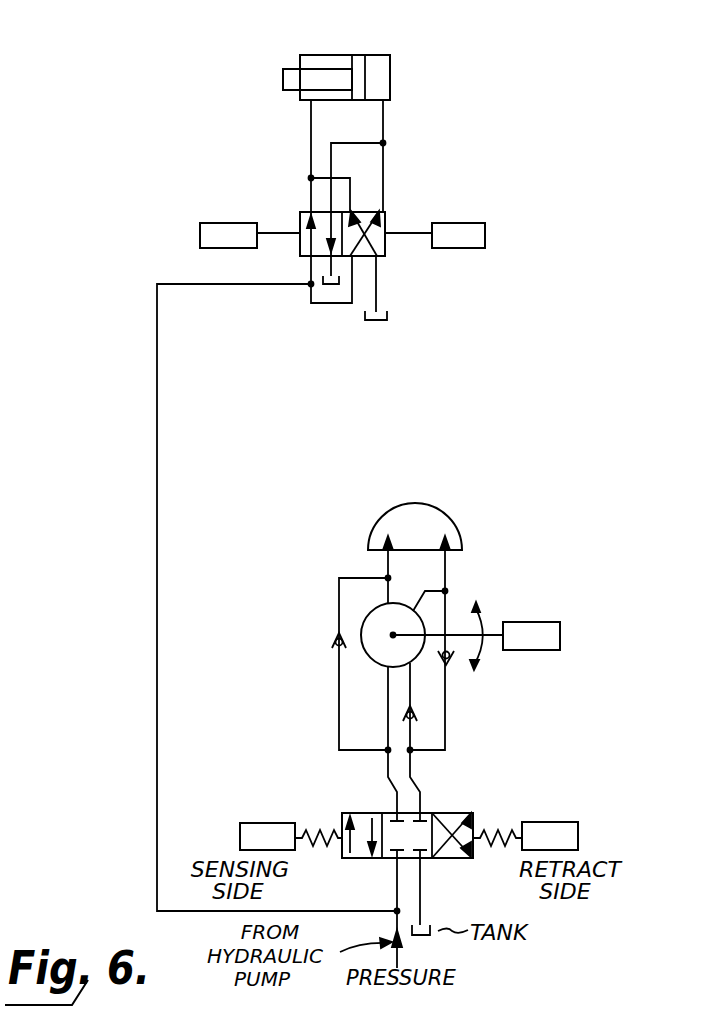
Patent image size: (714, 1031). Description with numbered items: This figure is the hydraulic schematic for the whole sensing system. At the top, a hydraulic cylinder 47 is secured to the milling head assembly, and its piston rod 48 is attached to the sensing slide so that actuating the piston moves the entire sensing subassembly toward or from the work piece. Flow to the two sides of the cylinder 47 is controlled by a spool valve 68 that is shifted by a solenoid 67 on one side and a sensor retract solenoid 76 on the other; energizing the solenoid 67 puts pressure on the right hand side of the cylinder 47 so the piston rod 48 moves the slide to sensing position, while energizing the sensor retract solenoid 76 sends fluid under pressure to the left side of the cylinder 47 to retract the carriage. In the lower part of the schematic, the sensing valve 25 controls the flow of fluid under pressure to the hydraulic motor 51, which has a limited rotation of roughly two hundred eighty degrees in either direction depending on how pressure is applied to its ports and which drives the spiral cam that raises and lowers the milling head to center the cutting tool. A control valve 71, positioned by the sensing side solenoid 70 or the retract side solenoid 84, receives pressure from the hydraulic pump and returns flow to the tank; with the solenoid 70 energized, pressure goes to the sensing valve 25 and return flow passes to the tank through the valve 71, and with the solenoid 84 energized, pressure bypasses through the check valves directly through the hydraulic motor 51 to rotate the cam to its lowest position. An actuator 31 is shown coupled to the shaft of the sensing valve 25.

The hydraulic cylinder 47 is at (323, 68).
The piston rod 48 is at (300, 80).
The sensor retract solenoid 76 is at (230, 228).
The solenoid 67 is at (487, 232).
The valve 68 is at (303, 244).
The hydraulic motor 51 is at (430, 525).
The sensing valve 25 is at (373, 623).
The control actuator 31 is at (490, 636).
The solenoid 70 is at (270, 832).
The valve 71 is at (452, 815).
The solenoid 84 is at (573, 830).